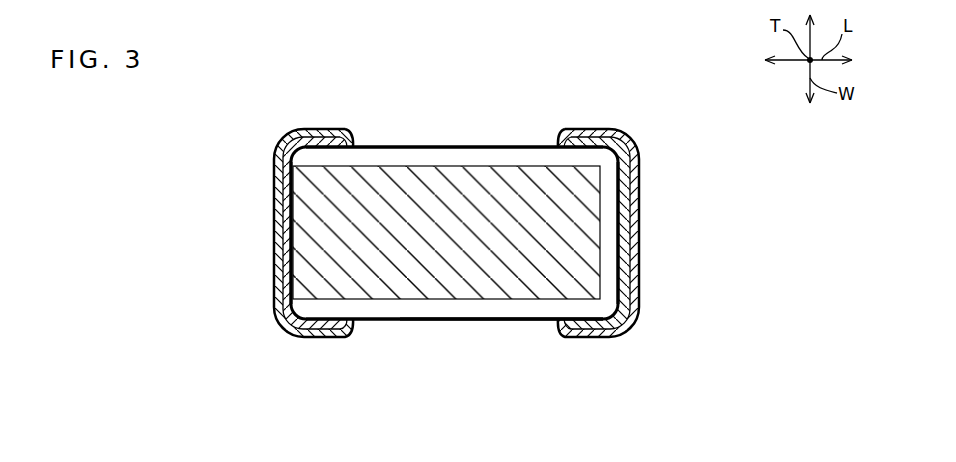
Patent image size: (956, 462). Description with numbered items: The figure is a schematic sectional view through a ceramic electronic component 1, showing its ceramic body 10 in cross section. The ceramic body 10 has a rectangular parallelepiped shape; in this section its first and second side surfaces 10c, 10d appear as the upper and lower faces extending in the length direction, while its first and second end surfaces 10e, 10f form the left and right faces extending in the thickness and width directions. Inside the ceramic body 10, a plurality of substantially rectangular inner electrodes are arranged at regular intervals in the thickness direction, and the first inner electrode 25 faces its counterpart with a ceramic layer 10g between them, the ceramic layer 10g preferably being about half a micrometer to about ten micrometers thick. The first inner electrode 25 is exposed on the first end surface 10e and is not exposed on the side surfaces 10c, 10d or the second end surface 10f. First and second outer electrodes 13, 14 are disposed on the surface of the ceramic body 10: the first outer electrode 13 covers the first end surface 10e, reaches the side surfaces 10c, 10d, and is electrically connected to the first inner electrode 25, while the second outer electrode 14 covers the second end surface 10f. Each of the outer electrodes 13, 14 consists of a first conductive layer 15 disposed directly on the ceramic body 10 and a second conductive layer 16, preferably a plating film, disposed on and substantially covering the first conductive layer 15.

The ceramic electronic component 1 is at (450, 218).
The ceramic body 10 is at (453, 243).
The first side surface 10c is at (441, 144).
The second side surface 10d is at (457, 320).
The first end surface 10e is at (288, 236).
The second end surface 10f is at (622, 240).
The ceramic layer 10g is at (528, 308).
The first outer electrode 13 is at (270, 233).
The second outer electrode 14 is at (643, 285).
The first conductive layer 15 is at (282, 268).
The second conductive layer 16 is at (280, 304).
The first inner electrode 25 is at (402, 302).